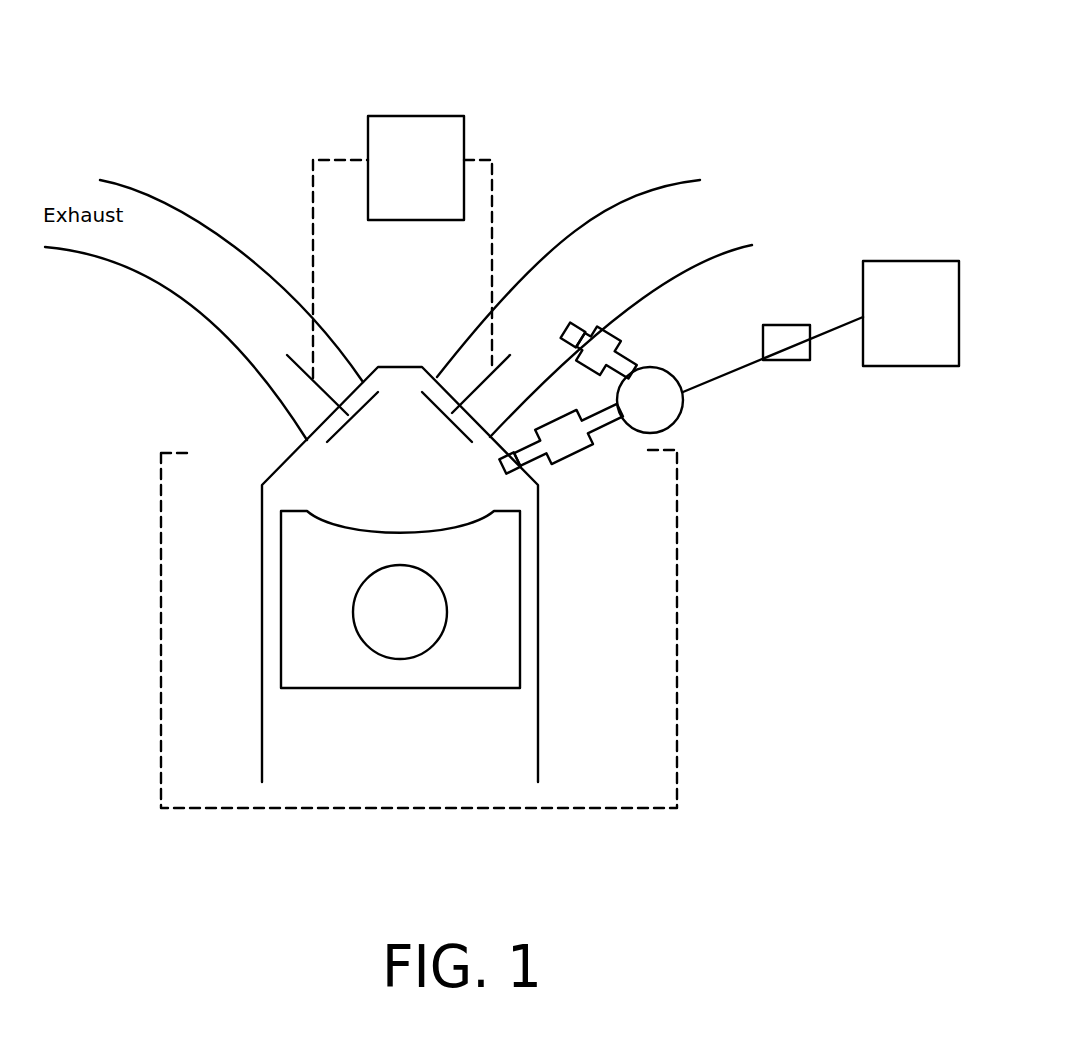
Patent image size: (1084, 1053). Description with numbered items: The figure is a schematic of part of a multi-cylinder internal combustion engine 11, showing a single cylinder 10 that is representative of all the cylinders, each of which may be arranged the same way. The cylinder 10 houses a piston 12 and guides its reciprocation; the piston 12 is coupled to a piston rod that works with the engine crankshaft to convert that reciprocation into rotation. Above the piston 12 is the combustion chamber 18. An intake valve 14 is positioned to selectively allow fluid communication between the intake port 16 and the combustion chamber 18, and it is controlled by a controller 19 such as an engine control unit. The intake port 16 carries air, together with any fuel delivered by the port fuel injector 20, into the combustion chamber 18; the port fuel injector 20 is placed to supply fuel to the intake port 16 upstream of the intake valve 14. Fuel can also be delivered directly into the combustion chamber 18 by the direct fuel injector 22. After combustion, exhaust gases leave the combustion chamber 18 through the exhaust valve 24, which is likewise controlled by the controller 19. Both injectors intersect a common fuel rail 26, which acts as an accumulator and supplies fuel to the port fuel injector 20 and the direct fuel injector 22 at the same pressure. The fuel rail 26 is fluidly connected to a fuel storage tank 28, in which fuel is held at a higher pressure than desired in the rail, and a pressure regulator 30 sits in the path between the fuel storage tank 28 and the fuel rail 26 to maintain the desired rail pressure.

The cylinder 10 is at (538, 590).
The internal combustion engine 11 is at (161, 657).
The piston 12 is at (281, 563).
The intake valve 14 is at (455, 395).
The intake port 16 is at (601, 248).
The combustion chamber 18 is at (349, 483).
The controller 19 is at (420, 116).
The port fuel injector 20 is at (615, 338).
The direct fuel injector 22 is at (580, 455).
The exhaust valve 24 is at (353, 395).
The fuel rail 26 is at (683, 403).
The fuel storage tank 28 is at (898, 261).
The pressure regulator 30 is at (785, 360).